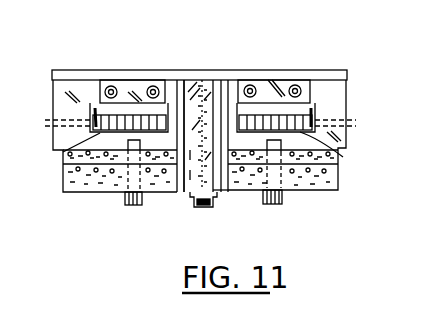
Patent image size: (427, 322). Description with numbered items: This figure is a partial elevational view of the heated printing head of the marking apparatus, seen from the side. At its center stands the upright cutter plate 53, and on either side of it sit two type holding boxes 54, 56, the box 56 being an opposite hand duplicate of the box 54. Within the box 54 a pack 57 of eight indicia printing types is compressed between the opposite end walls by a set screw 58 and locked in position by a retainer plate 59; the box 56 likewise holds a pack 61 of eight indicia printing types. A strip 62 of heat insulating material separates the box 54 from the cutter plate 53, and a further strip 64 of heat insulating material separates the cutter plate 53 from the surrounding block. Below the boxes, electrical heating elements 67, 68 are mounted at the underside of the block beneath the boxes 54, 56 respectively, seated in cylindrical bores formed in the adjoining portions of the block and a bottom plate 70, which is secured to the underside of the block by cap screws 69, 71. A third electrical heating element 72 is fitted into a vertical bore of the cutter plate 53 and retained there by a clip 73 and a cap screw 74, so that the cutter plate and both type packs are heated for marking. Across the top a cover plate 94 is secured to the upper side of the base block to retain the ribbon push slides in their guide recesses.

The cutter plate 53 is at (190, 80).
The type holding box 54 is at (93, 105).
The type holding box 56 is at (316, 106).
The pack of indicia printing types 57 is at (62, 150).
The set screw 58 is at (53, 124).
The retainer plate 59 is at (132, 86).
The pack of indicia printing types 61 is at (333, 150).
The strip of heat insulating material 62 is at (182, 80).
The strip of heat insulating material 64 is at (223, 80).
The electrical heating element 67 is at (165, 178).
The electrical heating element 68 is at (318, 183).
The cap screw 69 is at (133, 207).
The bottom plate 70 is at (87, 193).
The cap screw 71 is at (273, 206).
The electrical heating element 72 is at (212, 80).
The clip 73 is at (217, 194).
The cap screw 74 is at (197, 209).
The cover plate 94 is at (320, 70).